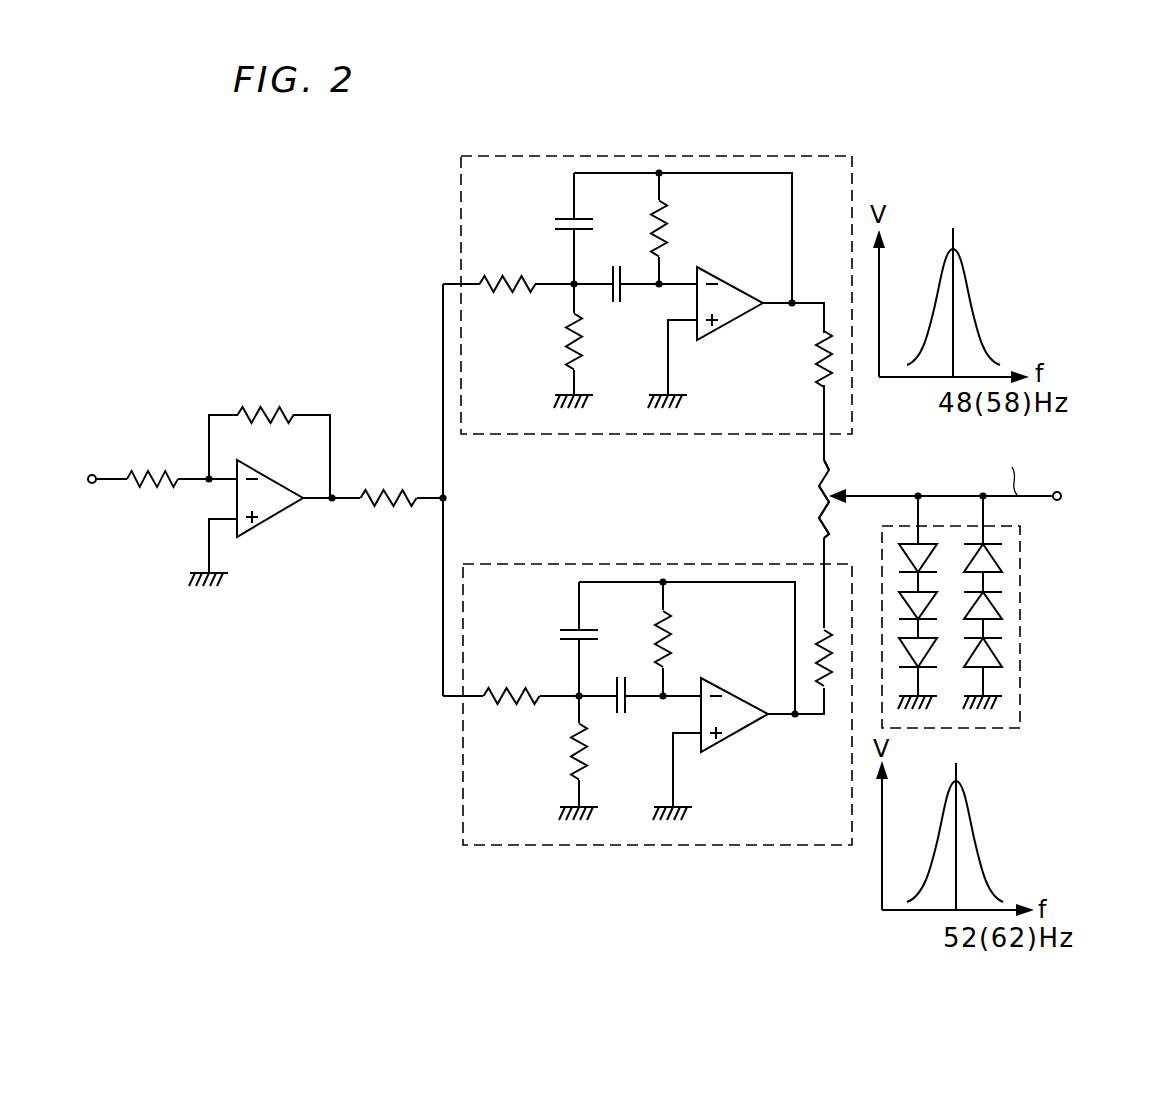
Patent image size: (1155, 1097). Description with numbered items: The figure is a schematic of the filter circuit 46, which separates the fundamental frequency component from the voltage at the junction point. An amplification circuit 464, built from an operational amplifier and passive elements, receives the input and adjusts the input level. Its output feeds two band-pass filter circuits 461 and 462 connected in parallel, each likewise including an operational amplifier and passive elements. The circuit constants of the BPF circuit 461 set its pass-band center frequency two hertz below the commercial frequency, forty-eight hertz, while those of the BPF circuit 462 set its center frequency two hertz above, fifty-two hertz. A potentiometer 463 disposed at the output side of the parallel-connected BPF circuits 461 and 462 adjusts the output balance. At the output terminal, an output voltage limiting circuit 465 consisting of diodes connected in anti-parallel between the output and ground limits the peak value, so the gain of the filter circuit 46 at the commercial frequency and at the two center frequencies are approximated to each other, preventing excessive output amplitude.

The filter circuit 46 is at (330, 192).
The band-pass filter circuit 461 is at (460, 247).
The band-pass filter circuit 462 is at (463, 768).
The potentiometer 463 is at (822, 494).
The amplification circuit 464 is at (190, 450).
The output voltage limiting circuit 465 is at (1020, 622).